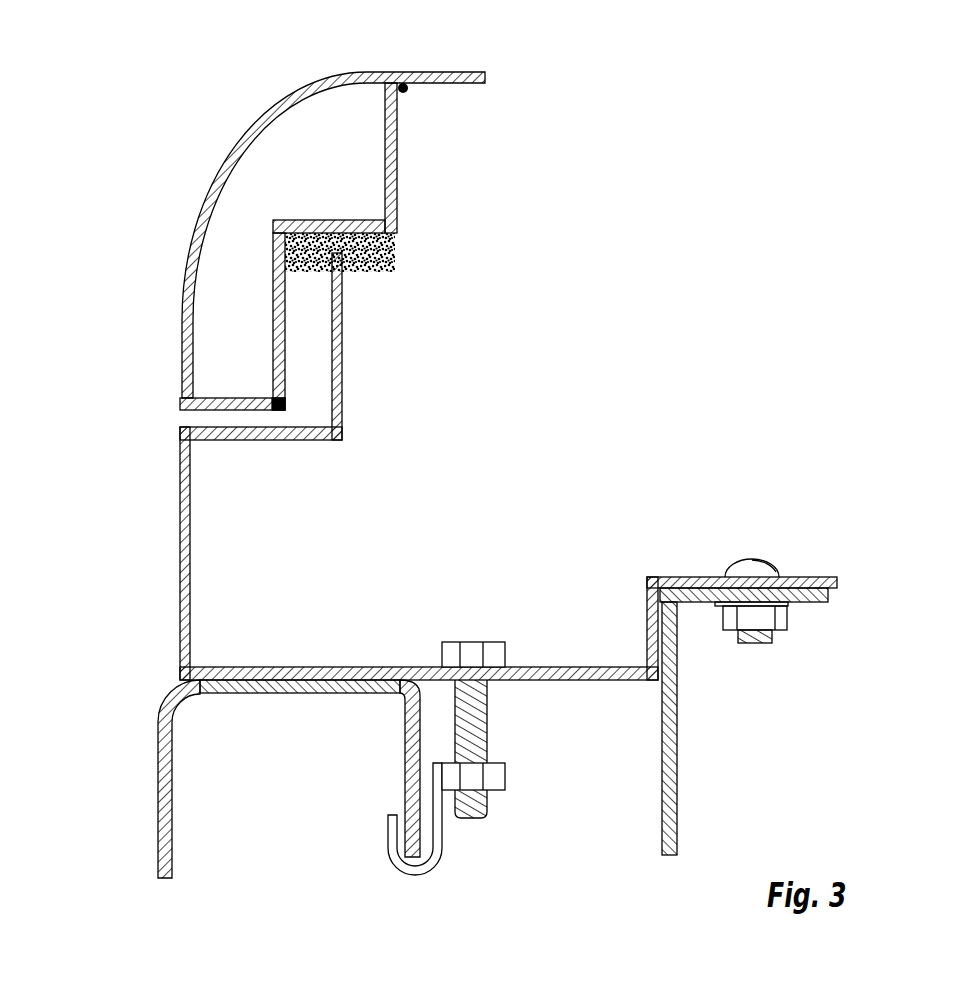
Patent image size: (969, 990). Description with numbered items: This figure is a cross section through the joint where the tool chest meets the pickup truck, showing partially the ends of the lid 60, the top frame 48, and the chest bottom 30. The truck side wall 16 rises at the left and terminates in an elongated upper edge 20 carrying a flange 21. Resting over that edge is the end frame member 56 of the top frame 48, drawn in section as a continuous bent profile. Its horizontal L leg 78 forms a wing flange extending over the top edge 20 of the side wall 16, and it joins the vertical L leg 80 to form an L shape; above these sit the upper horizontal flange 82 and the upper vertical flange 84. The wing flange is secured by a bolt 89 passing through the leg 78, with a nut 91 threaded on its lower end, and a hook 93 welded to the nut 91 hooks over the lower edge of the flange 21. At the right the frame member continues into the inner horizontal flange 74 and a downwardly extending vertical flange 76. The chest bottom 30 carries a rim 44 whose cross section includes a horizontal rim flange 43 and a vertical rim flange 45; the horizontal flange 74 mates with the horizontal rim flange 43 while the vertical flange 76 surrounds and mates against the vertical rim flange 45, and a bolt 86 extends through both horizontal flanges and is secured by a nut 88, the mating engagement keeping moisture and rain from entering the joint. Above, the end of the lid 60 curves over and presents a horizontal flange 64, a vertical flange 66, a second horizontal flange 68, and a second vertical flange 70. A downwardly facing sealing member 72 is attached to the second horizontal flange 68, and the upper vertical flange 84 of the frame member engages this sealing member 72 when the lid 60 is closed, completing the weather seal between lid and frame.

The side wall 16 is at (148, 750).
The upper edge 20 is at (310, 693).
The flange 21 is at (403, 775).
The chest bottom 30 is at (656, 803).
The horizontal rim flange 43 is at (808, 600).
The rim 44 is at (841, 610).
The vertical rim flange 45 is at (679, 737).
The top frame 48 is at (165, 463).
The end frame member 56 is at (168, 612).
The lid 60 is at (365, 70).
The horizontal flange 64 is at (253, 398).
The vertical flange 66 is at (273, 300).
The second horizontal flange 68 is at (340, 220).
The second vertical flange 70 is at (397, 140).
The sealing member 72 is at (398, 258).
The inner horizontal flange 74 is at (703, 577).
The downwardly extending vertical flange 76 is at (647, 605).
The L leg 78 is at (243, 667).
The L leg 80 is at (190, 583).
The upper horizontal flange 82 is at (255, 440).
The upper vertical flange 84 is at (342, 380).
The bolt 86 is at (778, 572).
The nut 88 is at (757, 622).
The bolt 89 is at (468, 642).
The nut 91 is at (505, 776).
The hook 93 is at (430, 870).